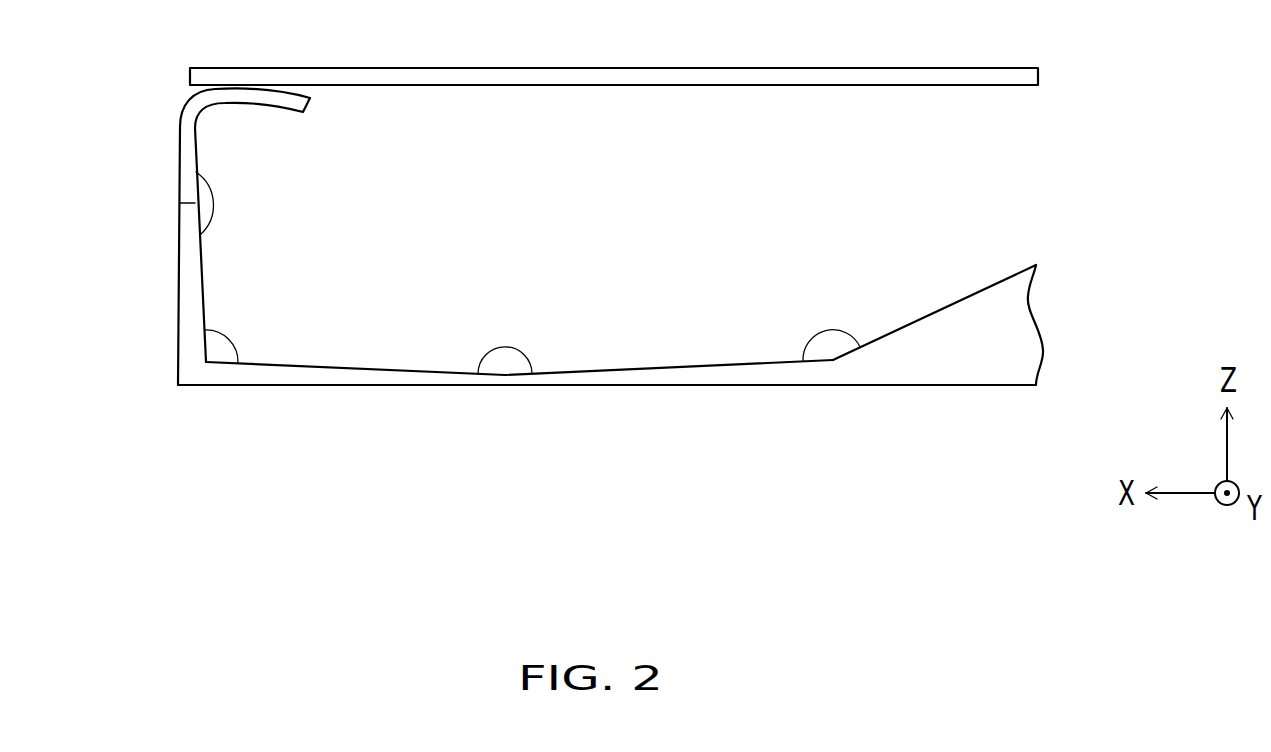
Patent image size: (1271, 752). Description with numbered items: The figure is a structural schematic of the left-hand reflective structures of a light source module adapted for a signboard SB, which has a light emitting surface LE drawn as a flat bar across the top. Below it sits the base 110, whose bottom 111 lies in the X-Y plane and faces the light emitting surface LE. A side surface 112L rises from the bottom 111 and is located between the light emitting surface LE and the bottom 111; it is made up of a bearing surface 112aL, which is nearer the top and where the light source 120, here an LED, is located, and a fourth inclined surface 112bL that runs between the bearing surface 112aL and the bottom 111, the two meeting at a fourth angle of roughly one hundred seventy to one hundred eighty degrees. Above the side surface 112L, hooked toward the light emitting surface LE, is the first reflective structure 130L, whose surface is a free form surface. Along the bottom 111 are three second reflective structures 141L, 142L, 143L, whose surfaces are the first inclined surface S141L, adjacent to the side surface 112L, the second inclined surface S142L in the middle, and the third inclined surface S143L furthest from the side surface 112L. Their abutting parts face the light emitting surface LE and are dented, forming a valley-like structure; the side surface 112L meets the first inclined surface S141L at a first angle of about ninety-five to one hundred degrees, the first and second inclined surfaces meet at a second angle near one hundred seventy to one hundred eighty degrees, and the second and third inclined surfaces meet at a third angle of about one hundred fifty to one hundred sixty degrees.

The base 110 is at (160, 433).
The bottom 111 is at (712, 223).
The side surface 112L is at (307, 245).
The bearing surface 112aL is at (197, 148).
The fourth inclined surface 112bL is at (202, 290).
The light source 120 is at (180, 133).
The first reflective structure 130L is at (198, 110).
The second reflective structure 141L is at (355, 369).
The second reflective structure 142L is at (669, 369).
The second reflective structure 143L is at (934, 346).
The first inclined surface S141L is at (357, 367).
The second inclined surface S142L is at (675, 362).
The third inclined surface S143L is at (968, 295).
The signboard SB is at (735, 73).
The light emitting surface LE is at (472, 87).